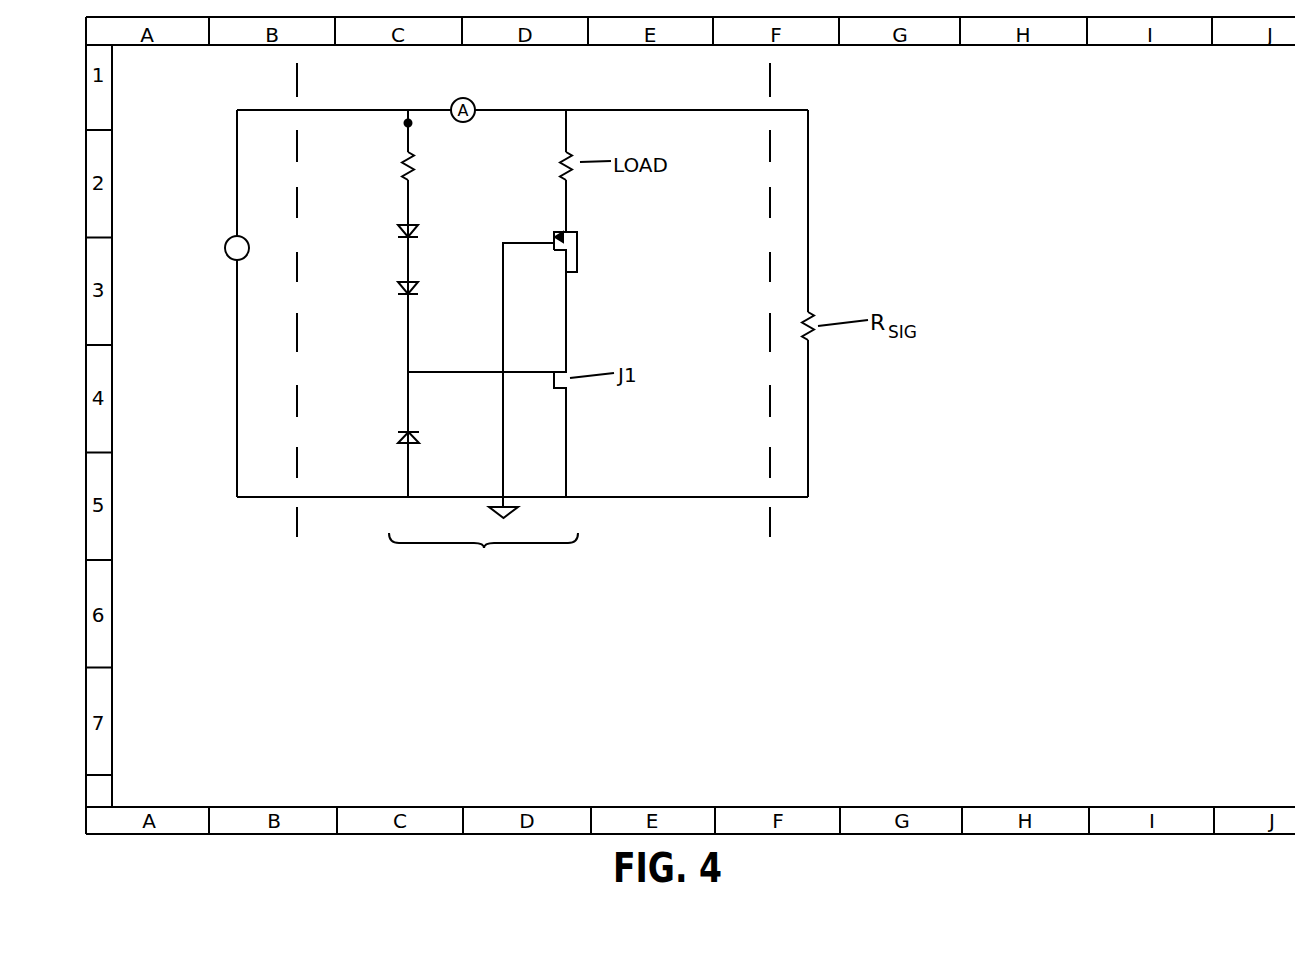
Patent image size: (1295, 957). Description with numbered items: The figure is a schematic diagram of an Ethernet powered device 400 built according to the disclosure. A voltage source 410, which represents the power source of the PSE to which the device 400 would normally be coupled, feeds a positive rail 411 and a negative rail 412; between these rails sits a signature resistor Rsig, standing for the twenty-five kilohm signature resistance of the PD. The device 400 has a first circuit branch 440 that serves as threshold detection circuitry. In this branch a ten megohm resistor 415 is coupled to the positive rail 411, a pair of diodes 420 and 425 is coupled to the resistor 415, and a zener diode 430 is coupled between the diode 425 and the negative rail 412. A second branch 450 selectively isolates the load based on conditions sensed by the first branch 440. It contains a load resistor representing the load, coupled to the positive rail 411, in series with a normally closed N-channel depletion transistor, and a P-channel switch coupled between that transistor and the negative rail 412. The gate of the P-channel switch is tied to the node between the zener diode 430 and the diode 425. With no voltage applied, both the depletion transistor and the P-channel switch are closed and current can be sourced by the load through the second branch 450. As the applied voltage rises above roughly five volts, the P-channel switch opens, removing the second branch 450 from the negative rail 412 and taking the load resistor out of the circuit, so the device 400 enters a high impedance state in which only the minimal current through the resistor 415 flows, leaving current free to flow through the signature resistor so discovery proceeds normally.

The Ethernet powered device 400 is at (483, 555).
The voltage source 410 is at (225, 248).
The positive rail 411 is at (677, 110).
The negative rail 412 is at (708, 497).
The resistor 415 is at (401, 168).
The diode 420 is at (396, 231).
The diode 425 is at (396, 286).
The zener diode 430 is at (397, 434).
The first circuit branch 440 is at (406, 121).
The second branch 450 is at (568, 452).